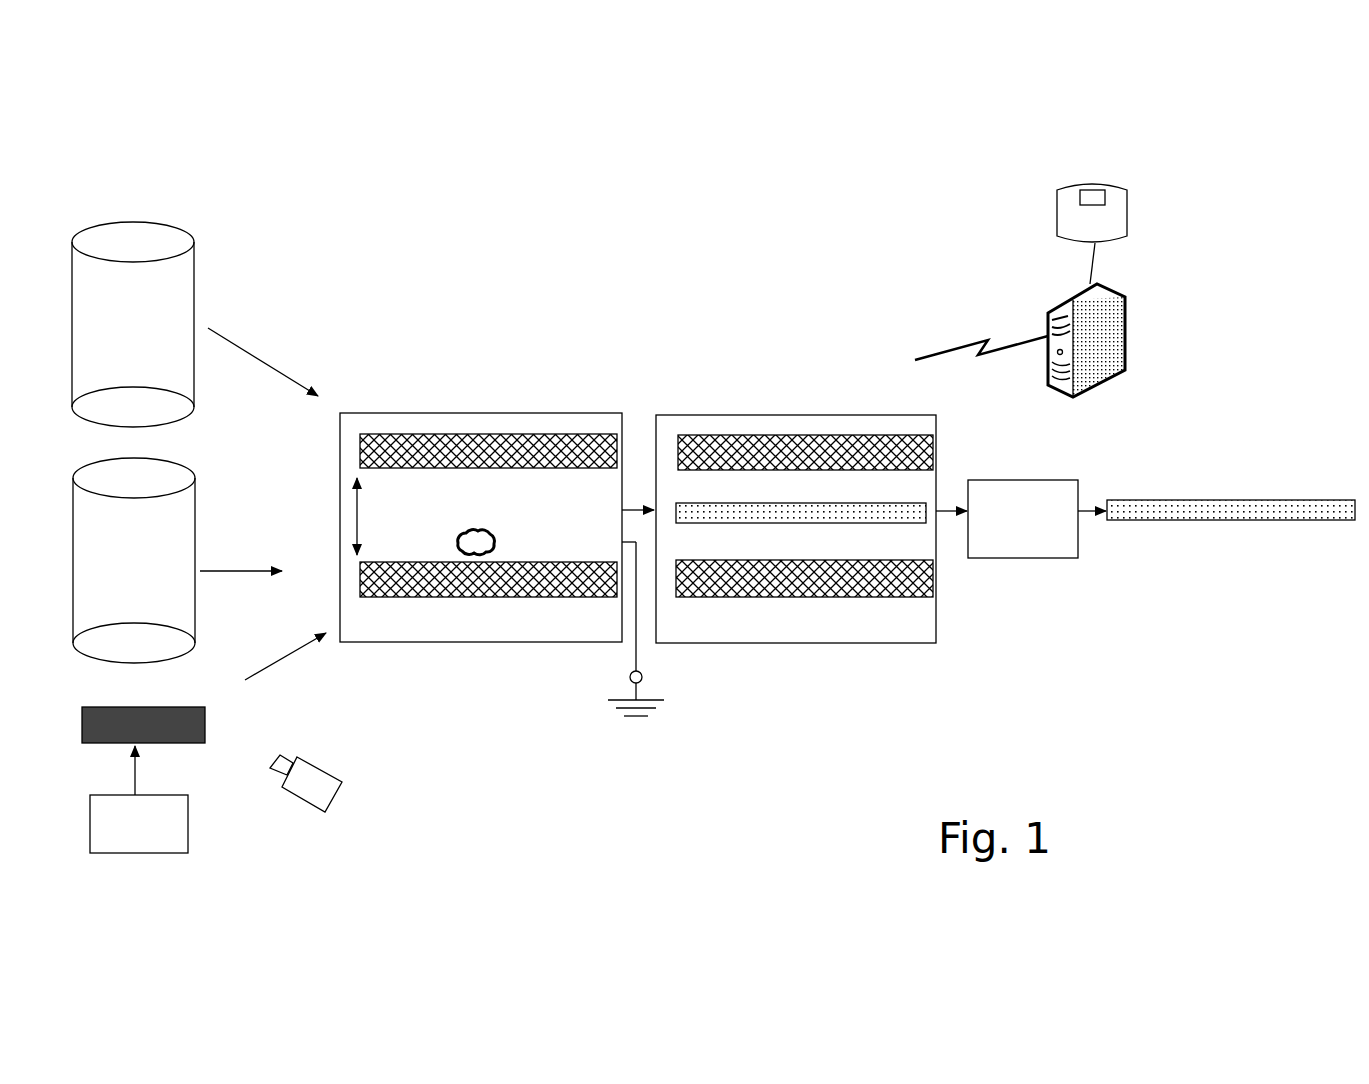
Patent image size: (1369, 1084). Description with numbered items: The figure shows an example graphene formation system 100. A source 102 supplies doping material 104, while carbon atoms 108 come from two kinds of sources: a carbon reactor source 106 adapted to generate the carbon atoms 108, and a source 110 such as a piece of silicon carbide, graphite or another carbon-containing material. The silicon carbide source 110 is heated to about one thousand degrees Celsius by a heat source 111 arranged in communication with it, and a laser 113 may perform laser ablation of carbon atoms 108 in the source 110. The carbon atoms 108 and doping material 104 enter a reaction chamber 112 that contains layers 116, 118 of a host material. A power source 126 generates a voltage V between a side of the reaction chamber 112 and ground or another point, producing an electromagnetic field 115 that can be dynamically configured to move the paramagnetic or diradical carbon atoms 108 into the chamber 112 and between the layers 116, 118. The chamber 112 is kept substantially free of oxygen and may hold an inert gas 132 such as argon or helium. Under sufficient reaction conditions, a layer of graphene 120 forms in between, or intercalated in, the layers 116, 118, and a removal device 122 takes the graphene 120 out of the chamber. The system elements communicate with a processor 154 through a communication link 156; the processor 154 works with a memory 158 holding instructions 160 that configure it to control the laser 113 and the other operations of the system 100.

The graphene formation system 100 is at (707, 502).
The source of doping material 102 is at (125, 237).
The doping material 104 is at (266, 315).
The source of carbon atoms 106 is at (120, 487).
The carbon atoms 108 is at (272, 530).
The source of carbon atoms 110 is at (212, 725).
The heat source 111 is at (185, 826).
The reaction chamber 112 is at (480, 413).
The laser 113 is at (318, 768).
The electromagnetic field 115 is at (596, 500).
The layer of host material 116 is at (562, 447).
The layer of host material 118 is at (548, 585).
The graphene 120 is at (803, 500).
The removal device 122 is at (995, 560).
The power source 126 is at (590, 678).
The inert gas 132 is at (455, 540).
The processor 154 is at (1060, 397).
The communication link 156 is at (980, 358).
The memory 158 is at (1075, 237).
The instructions 160 is at (1080, 190).